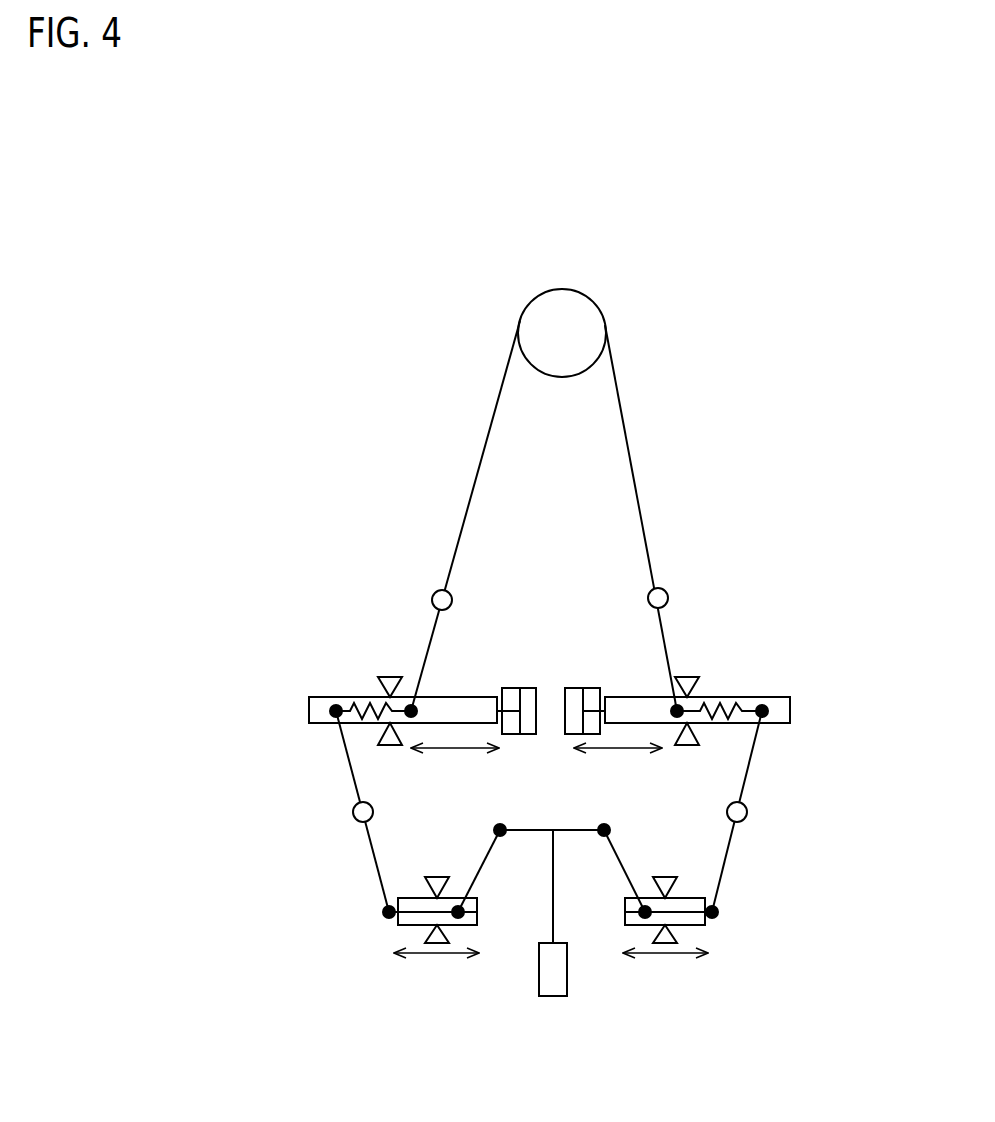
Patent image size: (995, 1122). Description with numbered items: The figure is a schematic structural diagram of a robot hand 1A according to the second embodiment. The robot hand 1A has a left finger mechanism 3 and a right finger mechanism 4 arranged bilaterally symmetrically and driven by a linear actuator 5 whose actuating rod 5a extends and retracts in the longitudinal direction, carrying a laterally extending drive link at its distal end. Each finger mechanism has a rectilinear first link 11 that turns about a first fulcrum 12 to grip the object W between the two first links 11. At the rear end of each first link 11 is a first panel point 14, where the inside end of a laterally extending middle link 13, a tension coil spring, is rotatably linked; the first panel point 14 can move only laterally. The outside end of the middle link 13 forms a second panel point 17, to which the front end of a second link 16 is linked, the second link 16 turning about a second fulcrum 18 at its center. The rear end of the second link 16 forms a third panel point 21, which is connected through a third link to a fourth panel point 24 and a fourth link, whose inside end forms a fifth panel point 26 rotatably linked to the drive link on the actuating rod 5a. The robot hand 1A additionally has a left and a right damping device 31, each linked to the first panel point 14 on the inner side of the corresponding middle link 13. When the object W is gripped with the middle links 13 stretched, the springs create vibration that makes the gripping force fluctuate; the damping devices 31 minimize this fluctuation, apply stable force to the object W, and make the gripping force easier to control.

The object W is at (578, 305).
The robot hand 1A is at (706, 342).
The left finger mechanism 3 is at (455, 476).
The right finger mechanism 4 is at (718, 488).
The linear actuator 5 is at (538, 975).
The actuating rod 5a is at (550, 896).
The first link 11 is at (486, 422).
The first fulcrum 12 is at (433, 596).
The middle link 13 is at (372, 697).
The first panel point 14 is at (415, 706).
The second link 16 is at (372, 861).
The second panel point 17 is at (330, 711).
The second fulcrum 18 is at (352, 808).
The third panel point 21 is at (386, 918).
The fourth panel point 24 is at (456, 905).
The fifth panel point 26 is at (497, 826).
The damping device 31 is at (511, 688).